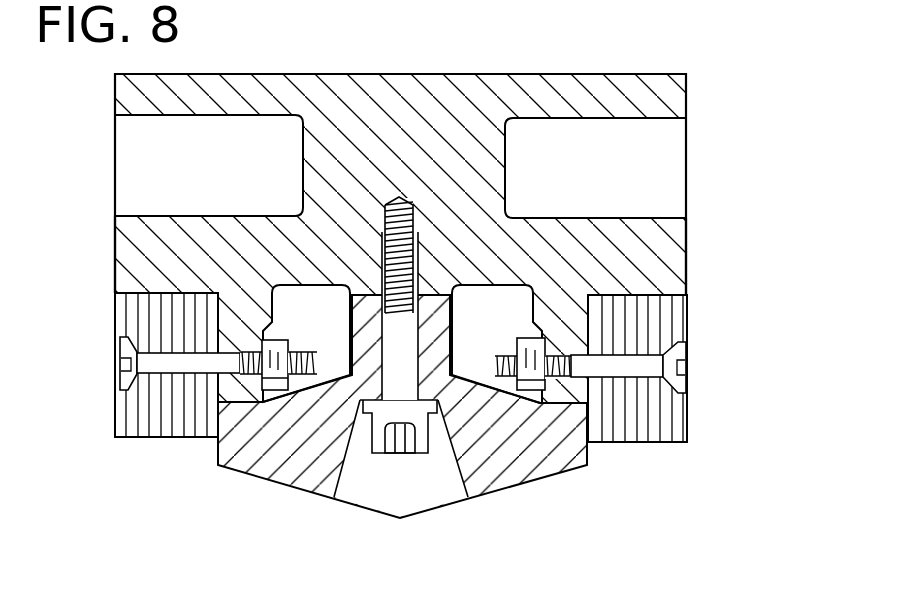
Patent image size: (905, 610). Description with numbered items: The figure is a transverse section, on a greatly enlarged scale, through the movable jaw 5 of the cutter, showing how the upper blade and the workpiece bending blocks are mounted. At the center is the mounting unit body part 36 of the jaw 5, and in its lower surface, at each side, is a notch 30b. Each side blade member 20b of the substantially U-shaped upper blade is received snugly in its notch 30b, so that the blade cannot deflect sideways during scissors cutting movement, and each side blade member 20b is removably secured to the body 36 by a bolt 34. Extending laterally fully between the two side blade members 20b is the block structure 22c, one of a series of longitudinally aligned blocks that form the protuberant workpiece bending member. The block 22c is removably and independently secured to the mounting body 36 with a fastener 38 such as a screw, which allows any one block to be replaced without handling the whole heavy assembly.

The movable jaw 5 is at (623, 82).
The mounting unit body part 36 is at (653, 247).
The notches 30b is at (138, 253).
The bolts 34 is at (158, 354).
The side blade members 20b is at (165, 432).
The block structure 22c is at (533, 453).
The fasteners 38 is at (395, 402).